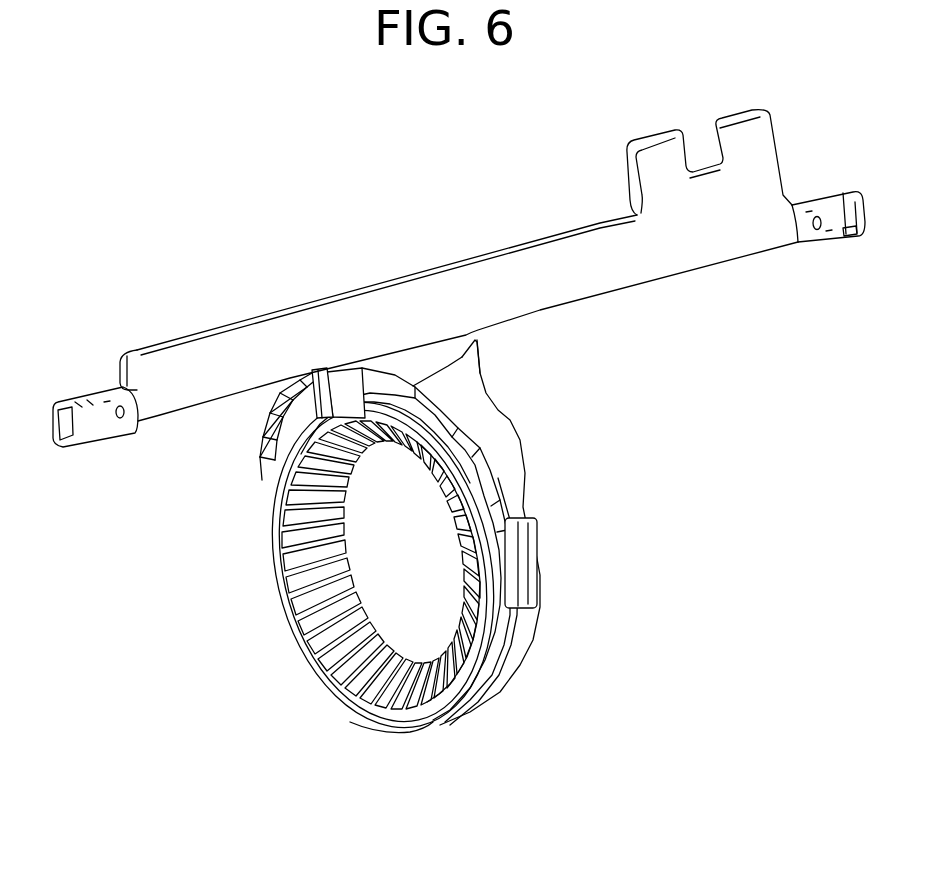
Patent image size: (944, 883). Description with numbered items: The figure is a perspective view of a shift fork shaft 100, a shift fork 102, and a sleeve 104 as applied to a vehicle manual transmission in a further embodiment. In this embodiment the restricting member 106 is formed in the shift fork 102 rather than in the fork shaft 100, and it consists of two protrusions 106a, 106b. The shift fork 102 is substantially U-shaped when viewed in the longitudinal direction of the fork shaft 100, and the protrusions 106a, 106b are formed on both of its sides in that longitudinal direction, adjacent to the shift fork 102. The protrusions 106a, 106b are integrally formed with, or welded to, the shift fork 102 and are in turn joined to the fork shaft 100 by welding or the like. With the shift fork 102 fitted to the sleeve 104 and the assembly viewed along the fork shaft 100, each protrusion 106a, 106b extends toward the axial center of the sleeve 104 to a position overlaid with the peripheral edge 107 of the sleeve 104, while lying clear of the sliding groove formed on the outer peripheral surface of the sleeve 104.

The shift fork shaft 100 is at (233, 314).
The shift fork 102 is at (521, 427).
The sleeve 104 is at (282, 643).
The restricting member 106 is at (268, 438).
The protrusion 106a is at (305, 395).
The protrusion 106b is at (471, 355).
The peripheral edge 107 is at (431, 716).